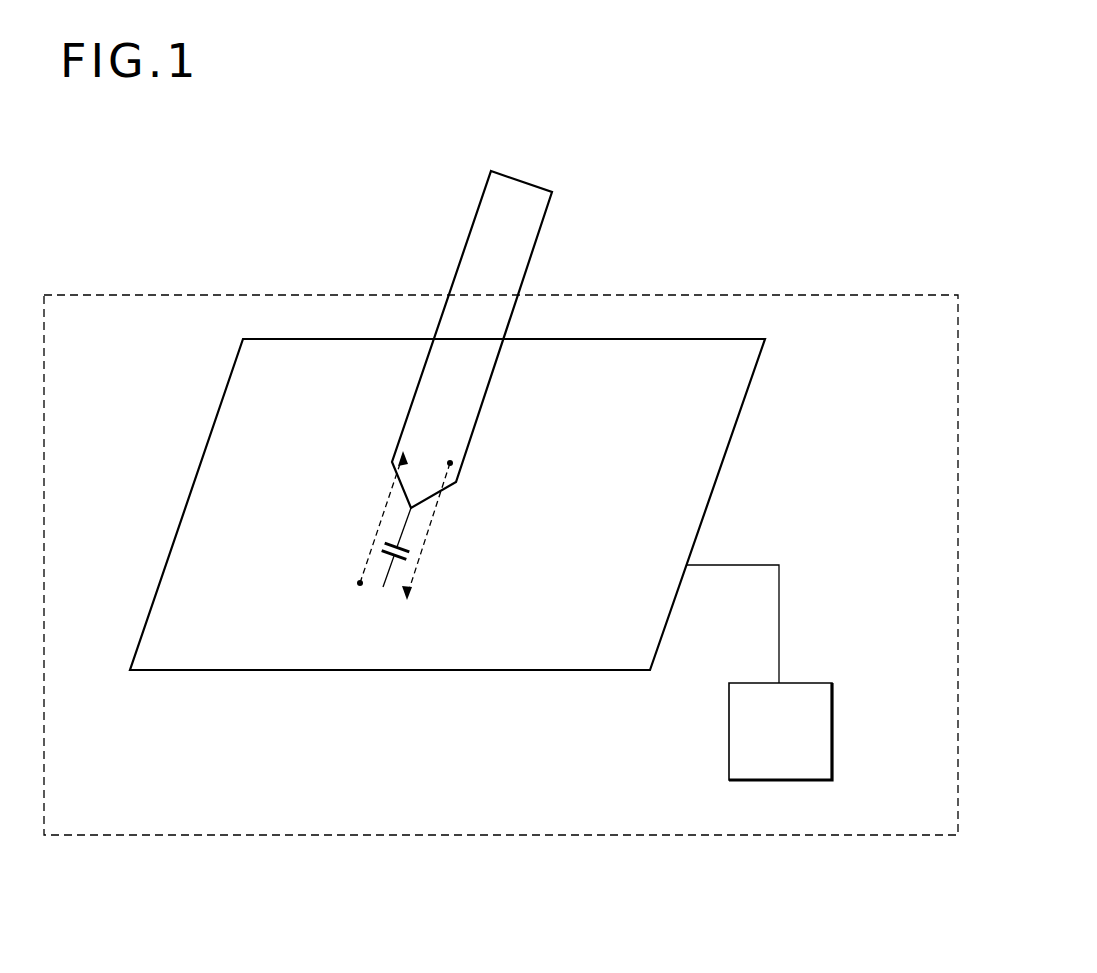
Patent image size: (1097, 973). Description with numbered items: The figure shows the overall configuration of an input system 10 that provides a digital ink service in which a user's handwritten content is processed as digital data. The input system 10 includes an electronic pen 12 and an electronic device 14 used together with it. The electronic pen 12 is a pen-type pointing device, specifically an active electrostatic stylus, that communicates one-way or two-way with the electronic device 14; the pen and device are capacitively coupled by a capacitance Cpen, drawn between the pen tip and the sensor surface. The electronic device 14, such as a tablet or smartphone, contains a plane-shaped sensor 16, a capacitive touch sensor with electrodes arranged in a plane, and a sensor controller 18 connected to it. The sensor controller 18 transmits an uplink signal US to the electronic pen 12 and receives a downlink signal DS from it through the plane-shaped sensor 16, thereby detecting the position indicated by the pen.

The input system 10 is at (737, 153).
The electronic pen 12 is at (528, 246).
The electronic device 14 is at (823, 297).
The plane-shaped sensor 16 is at (717, 473).
The sensor controller 18 is at (833, 735).
The uplink signal US is at (377, 532).
The downlink signal DS is at (428, 535).
The capacitance Cpen is at (414, 556).